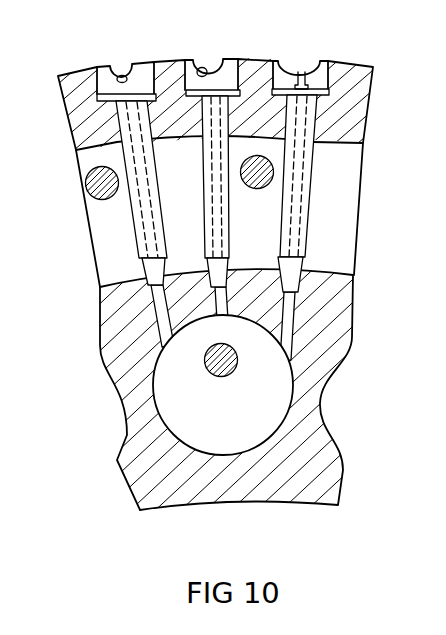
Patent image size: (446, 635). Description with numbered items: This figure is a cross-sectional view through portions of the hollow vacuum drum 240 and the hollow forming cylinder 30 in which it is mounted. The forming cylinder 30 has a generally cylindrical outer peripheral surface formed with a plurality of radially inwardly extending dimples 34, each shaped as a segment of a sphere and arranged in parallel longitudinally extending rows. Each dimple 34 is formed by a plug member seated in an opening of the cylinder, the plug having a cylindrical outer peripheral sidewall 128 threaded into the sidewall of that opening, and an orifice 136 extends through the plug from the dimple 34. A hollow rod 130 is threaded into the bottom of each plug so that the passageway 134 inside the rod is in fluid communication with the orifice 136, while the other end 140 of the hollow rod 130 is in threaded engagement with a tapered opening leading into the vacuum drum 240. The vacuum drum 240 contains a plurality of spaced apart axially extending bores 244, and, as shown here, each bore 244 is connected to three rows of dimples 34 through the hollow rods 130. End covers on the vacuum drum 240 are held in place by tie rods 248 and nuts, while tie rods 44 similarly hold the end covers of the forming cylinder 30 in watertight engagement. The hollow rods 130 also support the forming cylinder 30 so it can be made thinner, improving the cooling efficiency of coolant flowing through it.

The hollow forming cylinder 30 is at (84, 78).
The dimples 34 is at (119, 78).
The orifice 136 is at (303, 72).
The cylindrical outer peripheral sidewall 128 is at (333, 82).
The passageway 134 is at (307, 159).
The hollow rod 130 is at (308, 208).
The tie rods 44 is at (85, 196).
The other end of hollow rod 140 is at (282, 268).
The hollow vacuum drum 240 is at (107, 313).
The bores 244 is at (253, 441).
The tie rods 248 is at (212, 371).